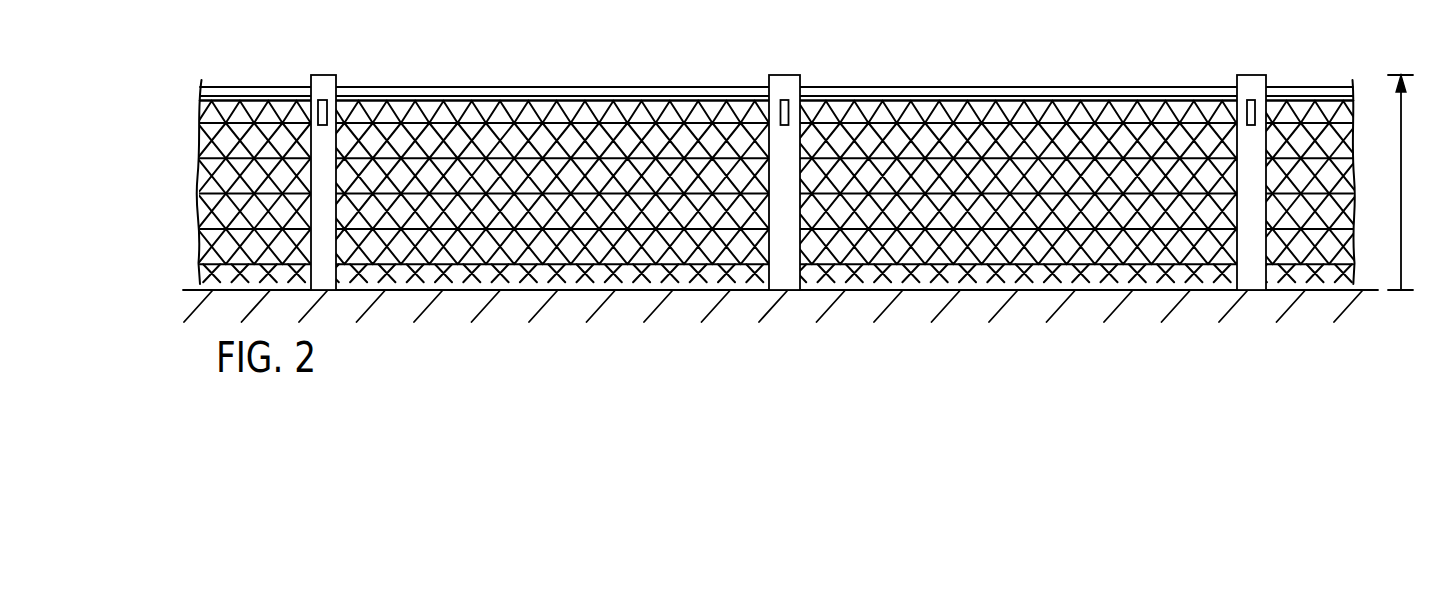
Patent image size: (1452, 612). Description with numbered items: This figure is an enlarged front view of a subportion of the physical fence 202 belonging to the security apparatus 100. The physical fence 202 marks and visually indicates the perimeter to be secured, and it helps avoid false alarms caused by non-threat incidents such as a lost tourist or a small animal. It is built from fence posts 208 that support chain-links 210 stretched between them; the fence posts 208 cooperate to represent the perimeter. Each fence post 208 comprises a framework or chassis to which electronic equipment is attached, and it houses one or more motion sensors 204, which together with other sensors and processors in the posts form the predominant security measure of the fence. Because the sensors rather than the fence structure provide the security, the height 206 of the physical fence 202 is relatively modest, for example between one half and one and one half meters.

The apparatus 100 is at (226, 46).
The physical fence 202 is at (1230, 80).
The motion sensor 204 is at (787, 75).
The height 206 is at (1403, 170).
The fence post 208 is at (782, 100).
The chain-link 210 is at (677, 252).